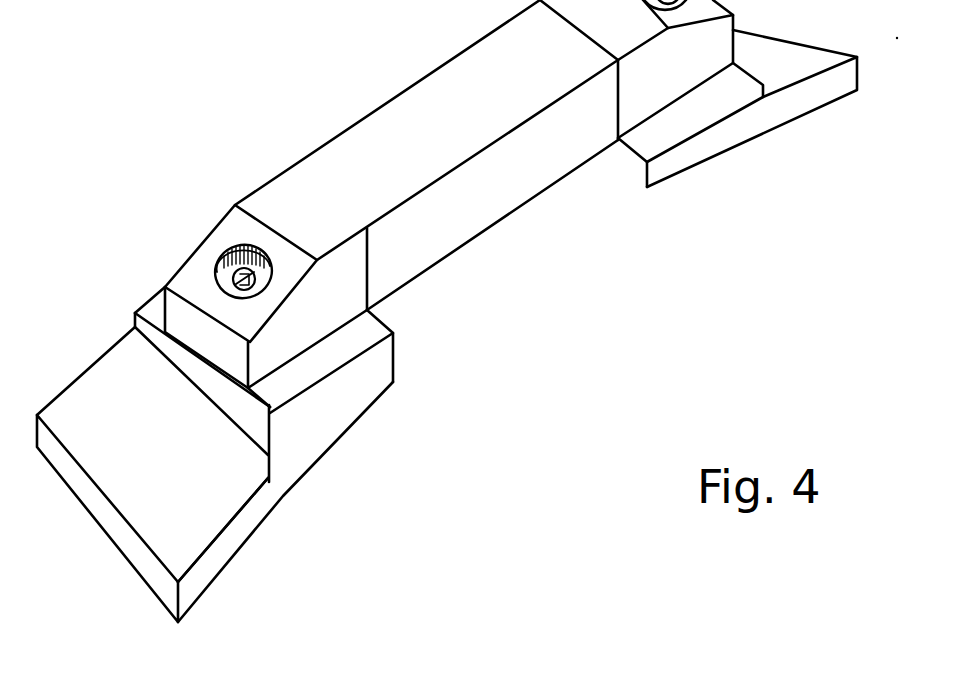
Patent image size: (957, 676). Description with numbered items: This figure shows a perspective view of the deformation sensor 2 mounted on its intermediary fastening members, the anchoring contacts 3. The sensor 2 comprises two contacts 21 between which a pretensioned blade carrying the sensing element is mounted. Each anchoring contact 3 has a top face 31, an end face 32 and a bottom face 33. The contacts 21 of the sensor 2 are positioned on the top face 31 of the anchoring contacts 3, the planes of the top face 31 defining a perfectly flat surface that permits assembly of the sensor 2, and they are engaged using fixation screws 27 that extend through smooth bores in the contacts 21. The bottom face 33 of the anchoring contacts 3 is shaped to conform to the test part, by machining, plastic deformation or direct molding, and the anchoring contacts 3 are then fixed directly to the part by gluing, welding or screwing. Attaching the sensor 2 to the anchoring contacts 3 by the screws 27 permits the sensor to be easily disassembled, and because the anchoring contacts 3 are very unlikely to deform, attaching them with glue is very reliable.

The deformation sensor 2 is at (358, 103).
The contacts 21 is at (293, 205).
The fixation screws 27 is at (232, 277).
The anchoring contacts 3 is at (186, 434).
The top face 31 is at (343, 341).
The end face 32 is at (203, 493).
The bottom face 33 is at (348, 432).